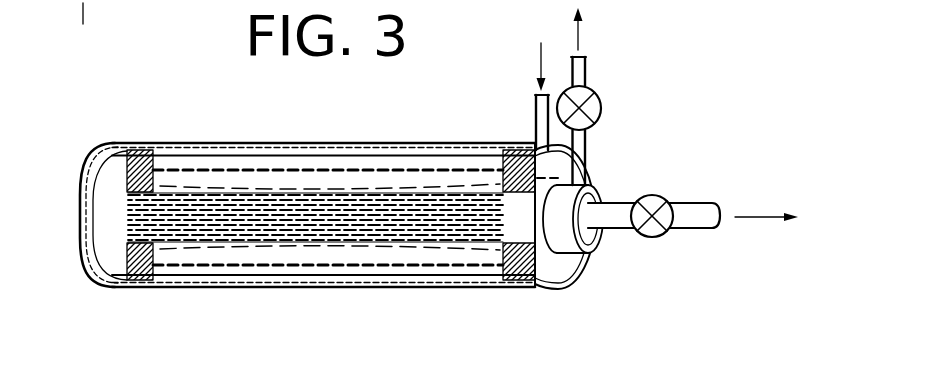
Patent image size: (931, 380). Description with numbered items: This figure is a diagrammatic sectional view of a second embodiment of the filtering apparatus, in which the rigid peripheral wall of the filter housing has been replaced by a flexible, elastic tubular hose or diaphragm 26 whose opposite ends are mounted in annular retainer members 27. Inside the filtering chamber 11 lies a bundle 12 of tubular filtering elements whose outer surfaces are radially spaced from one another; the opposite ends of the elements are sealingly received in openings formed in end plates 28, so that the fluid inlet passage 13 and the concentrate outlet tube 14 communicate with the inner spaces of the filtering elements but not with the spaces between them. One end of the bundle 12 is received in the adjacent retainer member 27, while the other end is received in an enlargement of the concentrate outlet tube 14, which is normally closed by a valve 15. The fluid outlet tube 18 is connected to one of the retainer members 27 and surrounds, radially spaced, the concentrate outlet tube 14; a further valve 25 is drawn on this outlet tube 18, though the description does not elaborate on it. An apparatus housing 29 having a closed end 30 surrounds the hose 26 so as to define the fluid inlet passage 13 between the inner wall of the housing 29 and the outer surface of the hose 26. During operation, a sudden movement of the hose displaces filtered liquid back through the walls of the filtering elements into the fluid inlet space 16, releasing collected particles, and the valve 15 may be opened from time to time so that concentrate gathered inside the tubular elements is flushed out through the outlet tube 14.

The filtering chamber 11 is at (362, 257).
The bundle of tubular filtering elements 12 is at (222, 246).
The fluid inlet passage 13 is at (376, 152).
The concentrate outlet tube 14 is at (693, 229).
The valve 15 is at (658, 197).
The fluid inlet space 16 is at (443, 238).
The fluid outlet tube 18 is at (586, 72).
The vent valve 25 is at (598, 116).
The flexible elastic tubular hose or diaphragm 26 is at (278, 170).
The annular retainer members 27 is at (132, 155).
The end plates 28 is at (127, 238).
The apparatus housing 29 is at (437, 146).
The closed end 30 is at (83, 193).